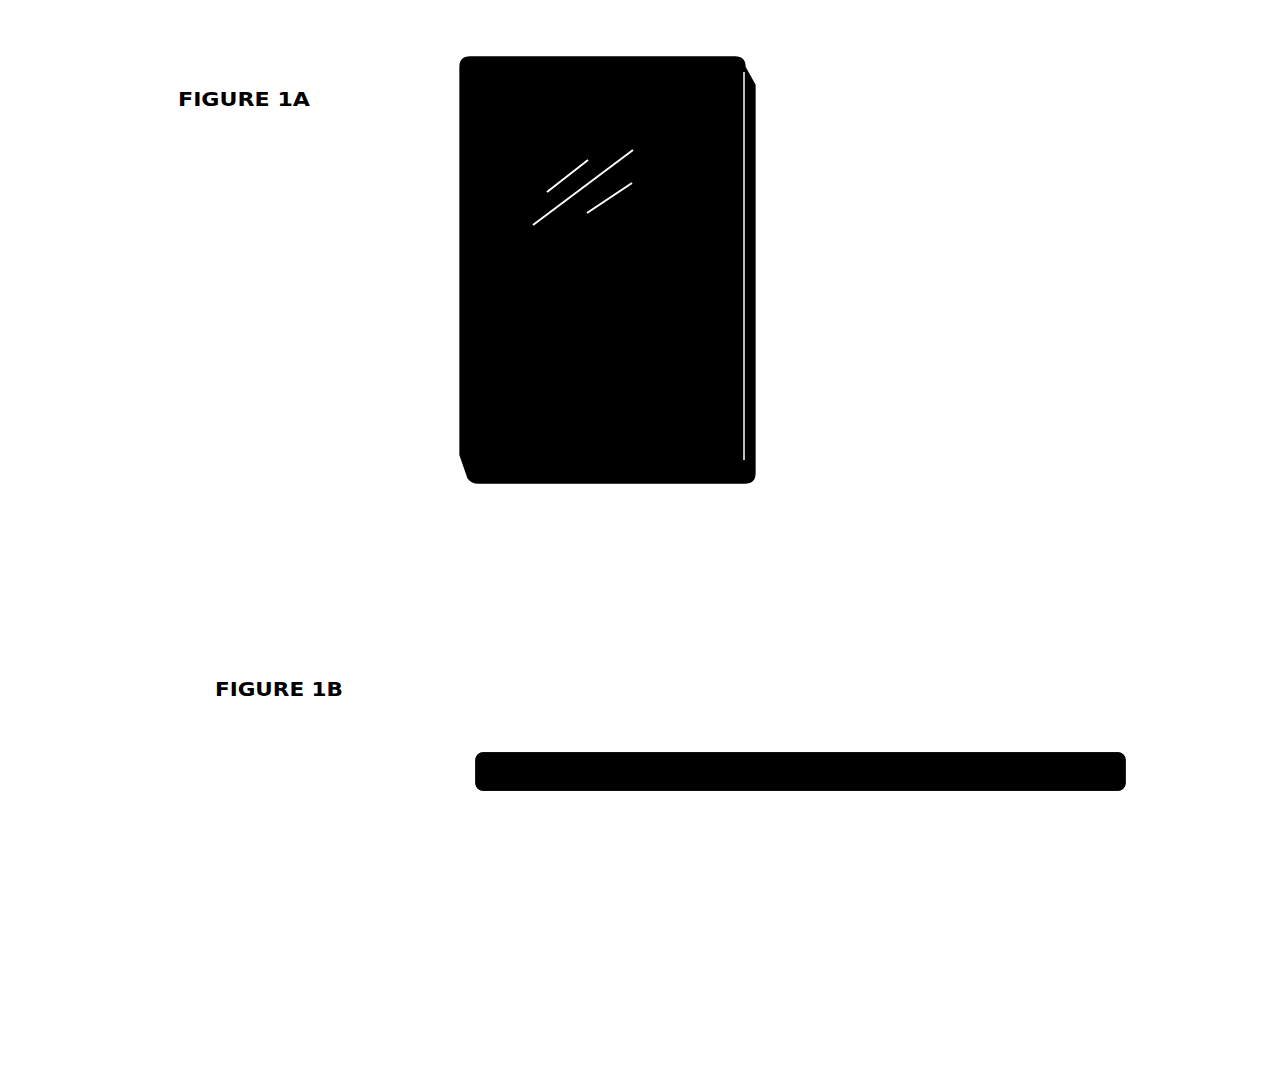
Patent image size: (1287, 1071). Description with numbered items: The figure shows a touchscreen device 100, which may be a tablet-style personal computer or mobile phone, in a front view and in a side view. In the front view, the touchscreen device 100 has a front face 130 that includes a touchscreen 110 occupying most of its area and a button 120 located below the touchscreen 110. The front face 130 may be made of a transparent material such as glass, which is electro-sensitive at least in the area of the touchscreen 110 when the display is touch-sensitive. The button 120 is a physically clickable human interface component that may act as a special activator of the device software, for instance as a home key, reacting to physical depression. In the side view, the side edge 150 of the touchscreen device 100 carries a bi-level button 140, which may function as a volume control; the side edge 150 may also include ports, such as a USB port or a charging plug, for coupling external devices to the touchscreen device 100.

In FIG. 1A, the touchscreen device 100 is at (906, 251).
In FIG. 1B, the touchscreen device 100 is at (1100, 704).
In FIG. 1A, the touchscreen 110 is at (468, 200).
In FIG. 1A, the button 120 is at (620, 440).
In FIG. 1A, the front face 130 is at (532, 441).
In FIG. 1B, the bi-level button 140 is at (518, 777).
In FIG. 1B, the side edge 150 is at (830, 770).